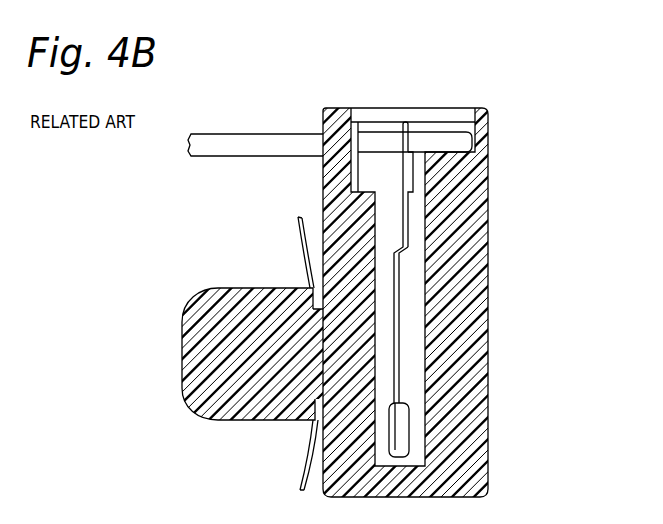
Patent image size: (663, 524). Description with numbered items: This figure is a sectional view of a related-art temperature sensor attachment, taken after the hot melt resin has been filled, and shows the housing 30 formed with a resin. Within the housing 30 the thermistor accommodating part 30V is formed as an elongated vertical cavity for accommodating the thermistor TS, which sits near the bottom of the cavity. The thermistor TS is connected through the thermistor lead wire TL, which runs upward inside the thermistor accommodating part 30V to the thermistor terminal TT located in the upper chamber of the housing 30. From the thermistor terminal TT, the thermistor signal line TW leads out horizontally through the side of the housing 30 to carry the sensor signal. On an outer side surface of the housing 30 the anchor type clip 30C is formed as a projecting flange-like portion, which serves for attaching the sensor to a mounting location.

The housing 30 is at (537, 139).
The clip 30C is at (243, 400).
The thermistor accommodating part 30V is at (415, 270).
The thermistor terminal TT is at (407, 128).
The thermistor lead wire TL is at (398, 370).
The thermistor TS is at (397, 436).
The thermistor signal line TW is at (267, 148).